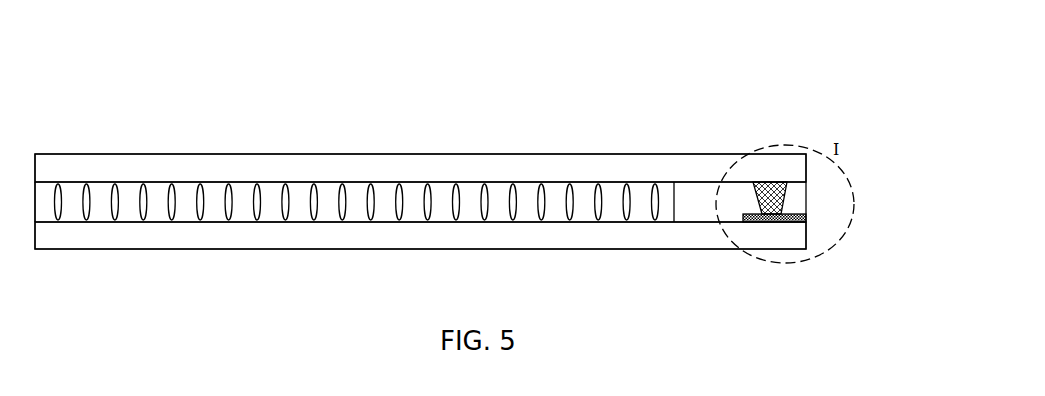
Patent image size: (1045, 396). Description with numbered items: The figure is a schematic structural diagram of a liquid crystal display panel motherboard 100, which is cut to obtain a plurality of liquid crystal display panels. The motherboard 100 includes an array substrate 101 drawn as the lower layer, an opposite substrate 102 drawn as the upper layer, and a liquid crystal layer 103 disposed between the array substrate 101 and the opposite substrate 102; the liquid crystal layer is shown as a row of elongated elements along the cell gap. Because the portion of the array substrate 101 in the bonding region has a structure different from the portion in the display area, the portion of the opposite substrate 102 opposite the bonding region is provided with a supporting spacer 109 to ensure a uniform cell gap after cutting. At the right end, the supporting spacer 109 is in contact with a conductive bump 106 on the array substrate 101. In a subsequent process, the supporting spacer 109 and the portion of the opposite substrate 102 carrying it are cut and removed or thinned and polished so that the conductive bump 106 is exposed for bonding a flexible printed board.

The liquid crystal display panel motherboard 100 is at (80, 98).
The array substrate 101 is at (593, 240).
The opposite substrate 102 is at (416, 172).
The liquid crystal layer 103 is at (496, 203).
The conductive bump 106 is at (803, 213).
The supporting spacer 109 is at (772, 203).